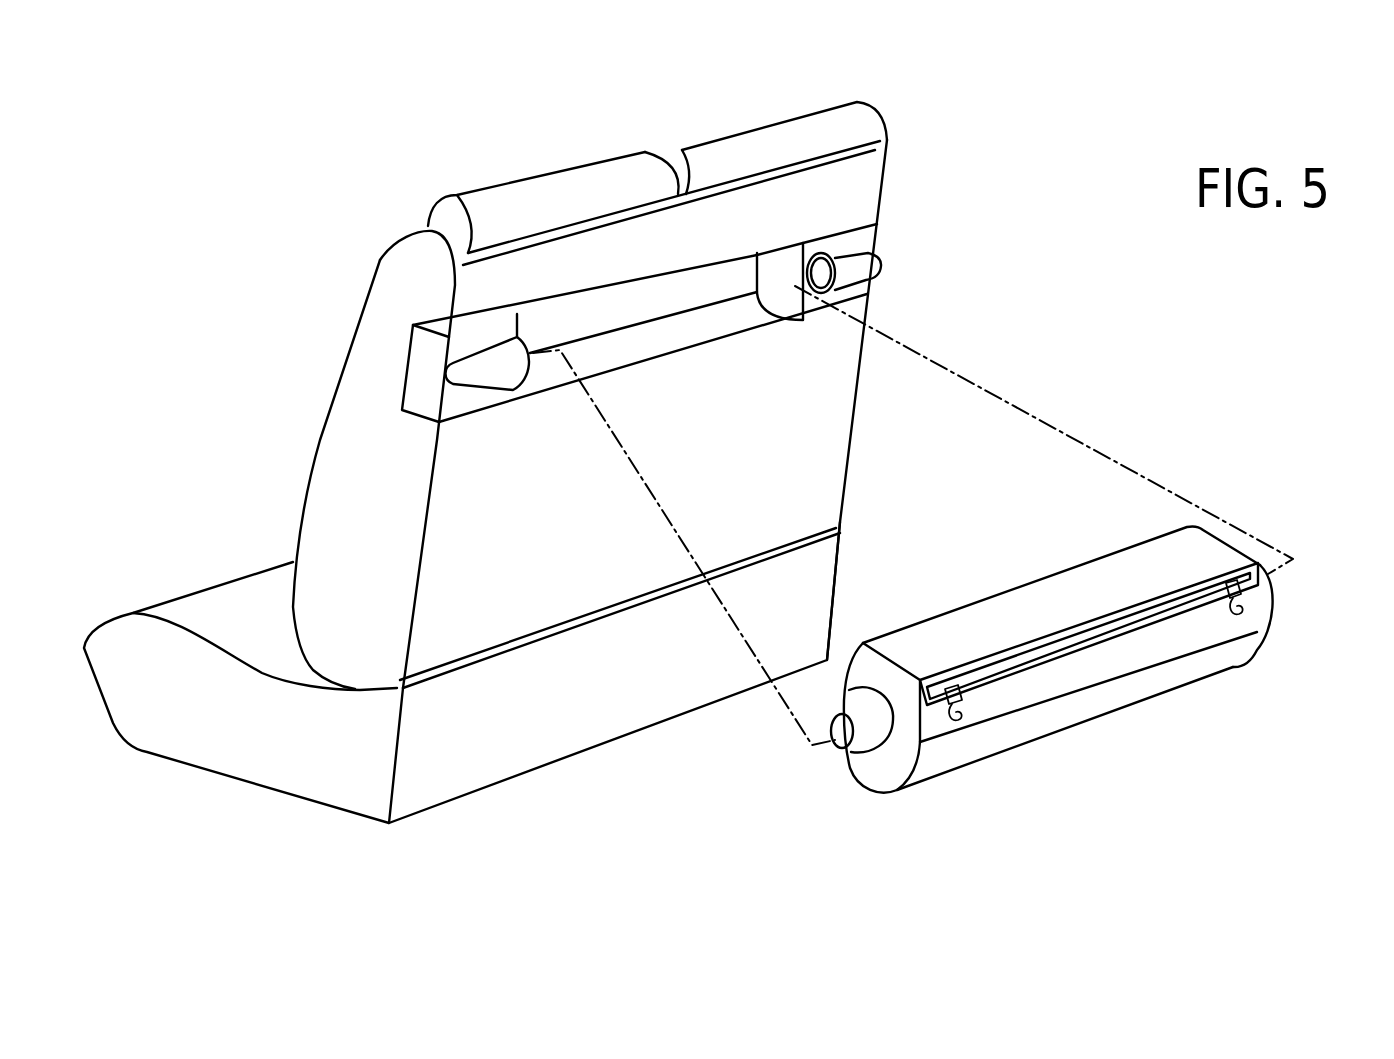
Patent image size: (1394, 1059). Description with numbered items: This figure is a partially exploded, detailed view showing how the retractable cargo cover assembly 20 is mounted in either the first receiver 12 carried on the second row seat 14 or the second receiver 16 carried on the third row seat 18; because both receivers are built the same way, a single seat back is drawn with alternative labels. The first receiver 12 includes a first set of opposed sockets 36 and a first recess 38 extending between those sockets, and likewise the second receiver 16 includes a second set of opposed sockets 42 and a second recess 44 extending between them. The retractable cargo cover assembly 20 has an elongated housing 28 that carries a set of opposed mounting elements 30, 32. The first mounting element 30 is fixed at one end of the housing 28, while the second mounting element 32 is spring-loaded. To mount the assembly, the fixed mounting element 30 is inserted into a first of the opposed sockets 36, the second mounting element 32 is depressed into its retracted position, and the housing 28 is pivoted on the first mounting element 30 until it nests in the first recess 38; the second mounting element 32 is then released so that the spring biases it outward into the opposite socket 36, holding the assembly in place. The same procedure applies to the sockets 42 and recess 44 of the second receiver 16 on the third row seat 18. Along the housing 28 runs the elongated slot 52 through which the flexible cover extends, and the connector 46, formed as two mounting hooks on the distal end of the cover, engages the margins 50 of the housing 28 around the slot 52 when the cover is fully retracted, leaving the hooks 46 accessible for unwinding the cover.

The first receiver 12 is at (504, 395).
The second receiver 16 is at (540, 412).
The second row seat 14 is at (462, 672).
The third row seat 18 is at (532, 590).
The retractable cargo cover assembly 20 is at (1074, 680).
The housing 28 is at (1028, 735).
The first mounting element 30 is at (1263, 582).
The second mounting element 32 is at (860, 742).
The first set of opposed sockets 36 is at (693, 265).
The second set of opposed sockets 42 is at (525, 348).
The first recess 38 is at (663, 238).
The second recess 44 is at (673, 297).
The connector 46 is at (963, 712).
The margins 50 is at (1153, 593).
The elongated slot 52 is at (1125, 630).